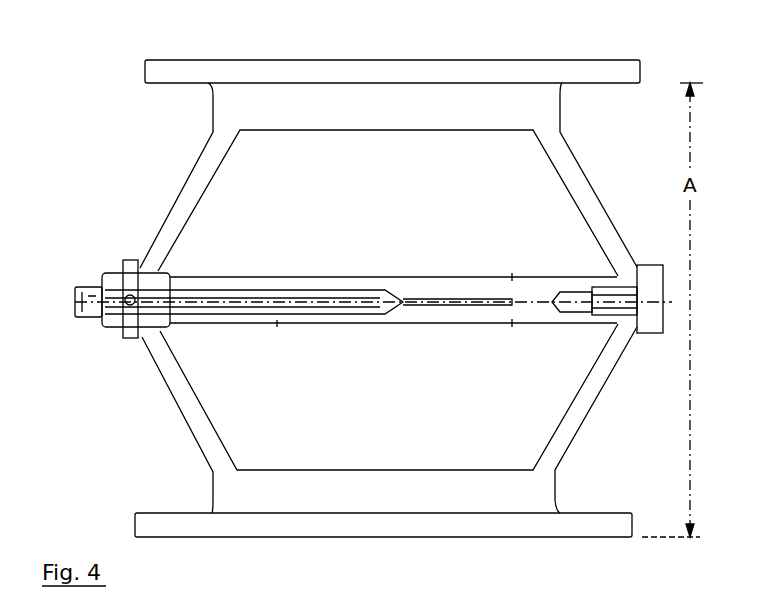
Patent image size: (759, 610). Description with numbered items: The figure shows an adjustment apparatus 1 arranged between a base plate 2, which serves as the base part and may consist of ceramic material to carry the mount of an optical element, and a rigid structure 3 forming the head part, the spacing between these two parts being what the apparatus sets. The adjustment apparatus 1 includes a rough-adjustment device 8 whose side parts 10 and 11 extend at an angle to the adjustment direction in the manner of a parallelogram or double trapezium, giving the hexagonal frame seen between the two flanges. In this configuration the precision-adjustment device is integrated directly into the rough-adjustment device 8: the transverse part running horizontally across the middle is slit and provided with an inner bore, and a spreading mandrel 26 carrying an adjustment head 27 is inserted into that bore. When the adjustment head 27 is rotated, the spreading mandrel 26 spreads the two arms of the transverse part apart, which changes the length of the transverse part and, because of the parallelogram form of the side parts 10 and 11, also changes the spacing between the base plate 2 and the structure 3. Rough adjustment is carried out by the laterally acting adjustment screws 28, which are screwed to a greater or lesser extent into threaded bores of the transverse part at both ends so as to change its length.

The adjustment apparatus 1 is at (174, 194).
The base plate 2 is at (566, 530).
The structure 3 is at (625, 72).
The rough-adjustment device 8 is at (163, 394).
The side part 10 is at (608, 445).
The side part 11 is at (213, 153).
The spreading mandrel 26 is at (275, 325).
The adjustment head 27 is at (78, 285).
The adjustment screws 28 is at (110, 333).